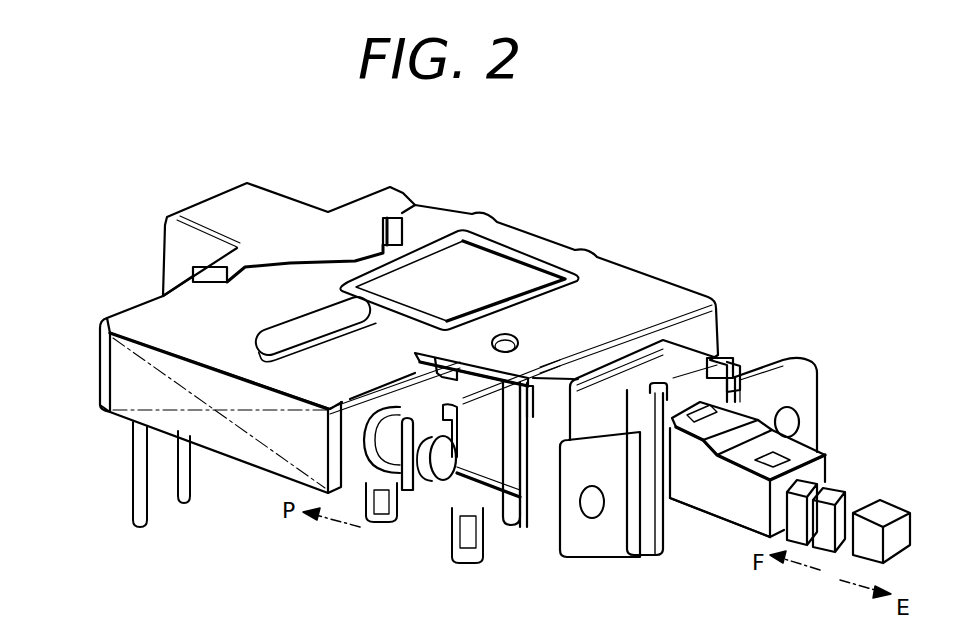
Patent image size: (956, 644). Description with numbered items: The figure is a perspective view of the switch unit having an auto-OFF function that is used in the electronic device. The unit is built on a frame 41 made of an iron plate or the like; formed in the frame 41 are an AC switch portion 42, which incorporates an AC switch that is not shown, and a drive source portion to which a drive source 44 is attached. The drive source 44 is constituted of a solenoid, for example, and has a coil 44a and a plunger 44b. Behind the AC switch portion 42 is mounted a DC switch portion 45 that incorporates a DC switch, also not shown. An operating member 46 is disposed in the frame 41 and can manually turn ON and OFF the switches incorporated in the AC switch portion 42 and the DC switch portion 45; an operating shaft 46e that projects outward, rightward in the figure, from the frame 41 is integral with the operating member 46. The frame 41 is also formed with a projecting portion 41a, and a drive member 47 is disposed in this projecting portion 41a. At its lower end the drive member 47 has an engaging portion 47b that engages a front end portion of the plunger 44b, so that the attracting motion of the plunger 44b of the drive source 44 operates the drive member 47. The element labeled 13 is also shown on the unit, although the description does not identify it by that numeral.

The boss / positioning pad 13 is at (163, 318).
The frame 41 is at (552, 241).
The projecting portion 41a is at (512, 336).
The AC switch portion 42 is at (495, 270).
The drive source 44 is at (133, 386).
The coil 44a is at (133, 395).
The plunger 44b is at (395, 455).
The DC switch portion 45 is at (242, 207).
The operating member 46 is at (697, 492).
The operating shaft 46e is at (755, 518).
The drive member 47 is at (463, 397).
The engaging portion 47b is at (410, 480).